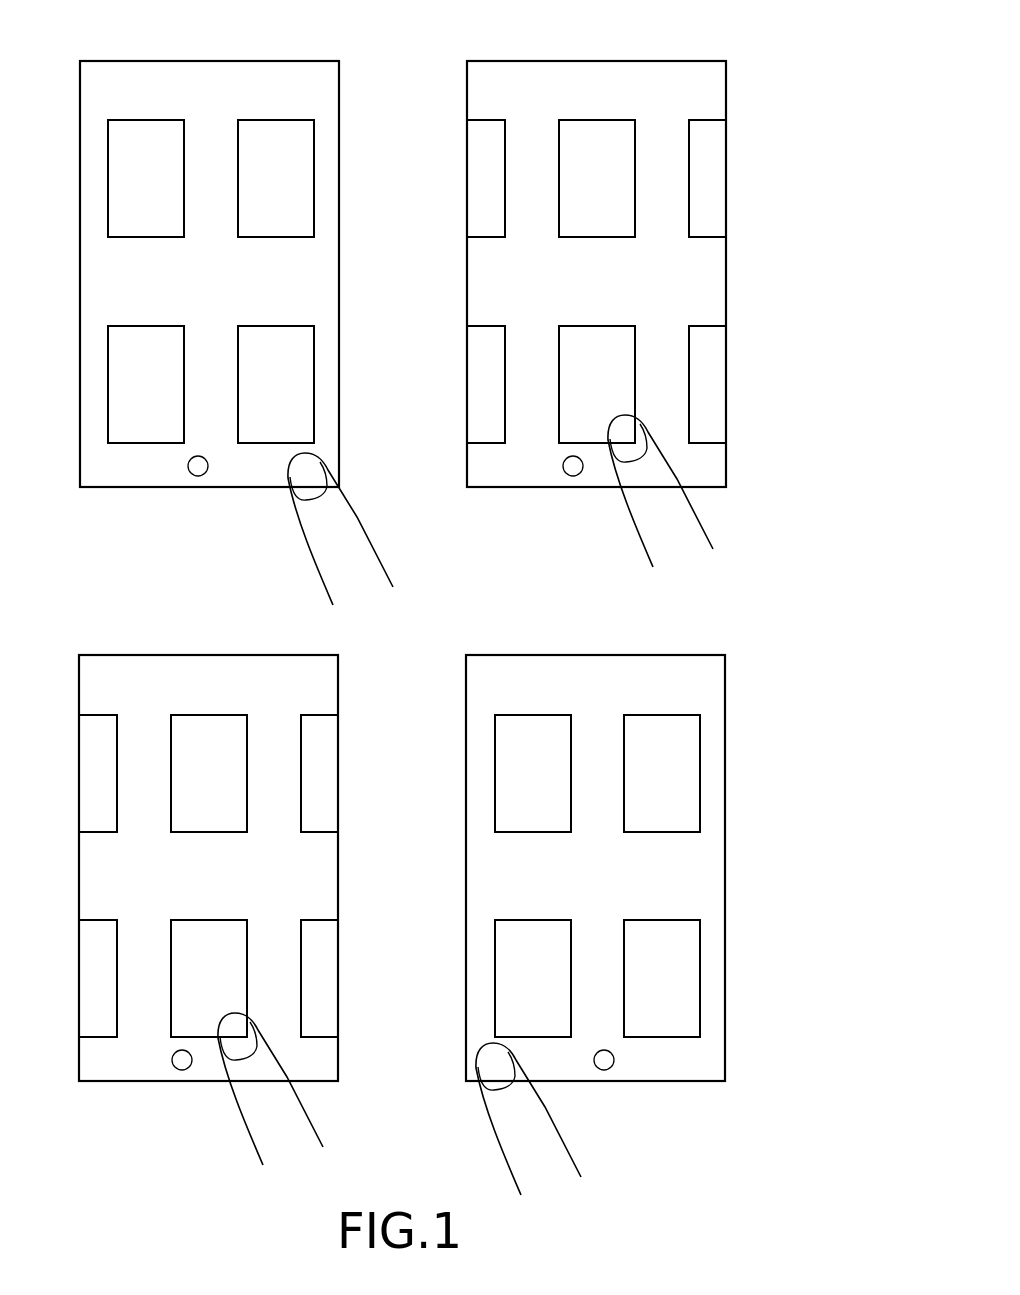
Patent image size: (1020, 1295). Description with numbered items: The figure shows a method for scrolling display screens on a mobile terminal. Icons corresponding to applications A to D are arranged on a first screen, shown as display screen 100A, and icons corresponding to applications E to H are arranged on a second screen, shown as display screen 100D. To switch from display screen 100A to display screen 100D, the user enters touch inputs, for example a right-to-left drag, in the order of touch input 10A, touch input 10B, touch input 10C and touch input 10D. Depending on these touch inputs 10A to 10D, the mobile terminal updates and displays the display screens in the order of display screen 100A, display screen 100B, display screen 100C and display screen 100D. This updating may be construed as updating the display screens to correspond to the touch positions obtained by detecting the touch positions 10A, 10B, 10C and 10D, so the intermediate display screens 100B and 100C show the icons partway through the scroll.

The display screen 100A is at (214, 61).
The display screen 100B is at (616, 61).
The display screen 100C is at (231, 655).
The display screen 100D is at (616, 655).
The touch input 10A is at (359, 528).
The touch input 10B is at (695, 517).
The touch input 10C is at (313, 1130).
The touch input 10D is at (563, 1146).